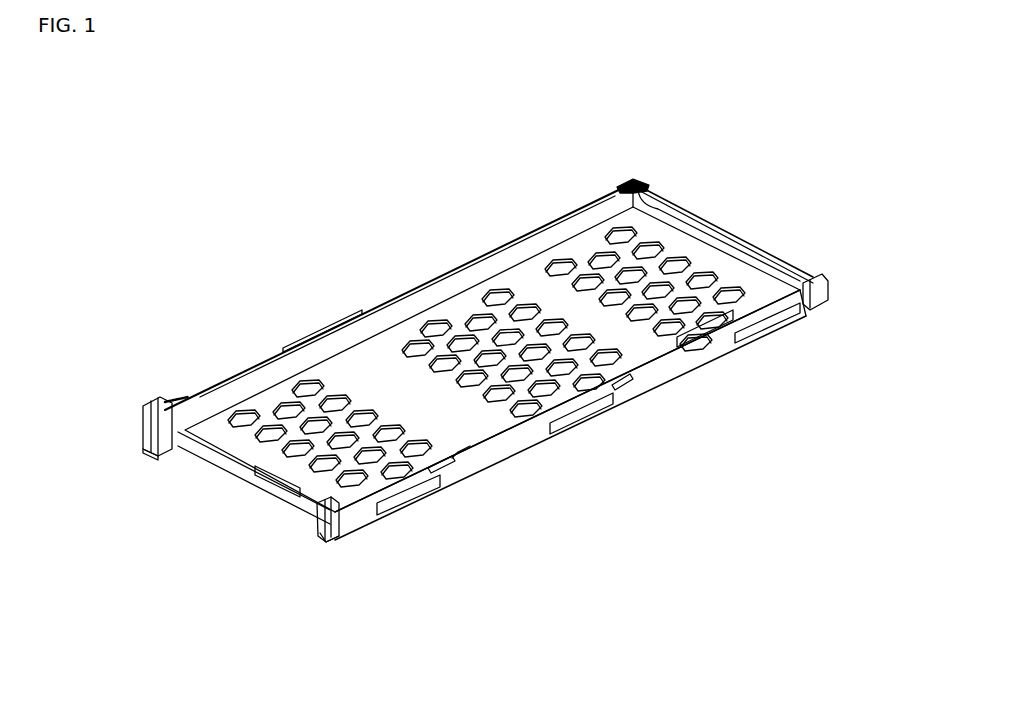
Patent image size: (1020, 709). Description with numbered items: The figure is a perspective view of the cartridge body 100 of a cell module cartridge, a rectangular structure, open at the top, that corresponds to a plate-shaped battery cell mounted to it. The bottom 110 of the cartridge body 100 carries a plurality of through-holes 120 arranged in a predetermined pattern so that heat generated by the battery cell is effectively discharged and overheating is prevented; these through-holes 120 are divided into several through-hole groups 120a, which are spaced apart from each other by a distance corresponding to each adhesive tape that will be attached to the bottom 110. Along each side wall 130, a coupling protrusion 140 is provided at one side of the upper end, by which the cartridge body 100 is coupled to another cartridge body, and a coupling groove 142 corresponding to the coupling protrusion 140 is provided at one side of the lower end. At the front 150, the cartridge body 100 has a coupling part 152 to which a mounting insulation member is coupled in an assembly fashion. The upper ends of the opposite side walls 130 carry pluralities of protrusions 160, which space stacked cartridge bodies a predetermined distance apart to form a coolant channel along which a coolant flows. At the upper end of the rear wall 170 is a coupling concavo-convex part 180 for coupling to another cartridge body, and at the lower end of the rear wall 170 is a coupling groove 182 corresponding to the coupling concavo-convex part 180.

The cartridge body 100 is at (98, 131).
The bottom 110 is at (583, 245).
The through-holes 120 is at (605, 343).
The through-hole groups 120a is at (458, 304).
The side wall 130 is at (507, 445).
The coupling protrusion 140 is at (163, 403).
The coupling groove 142 is at (355, 515).
The front 150 is at (153, 433).
The coupling part 152 is at (285, 495).
The protrusions 160 is at (323, 328).
The rear wall 170 is at (632, 185).
The coupling concavo-convex part 180 is at (720, 226).
The coupling groove 182 is at (812, 268).